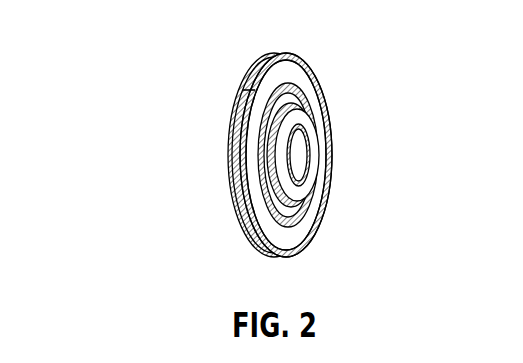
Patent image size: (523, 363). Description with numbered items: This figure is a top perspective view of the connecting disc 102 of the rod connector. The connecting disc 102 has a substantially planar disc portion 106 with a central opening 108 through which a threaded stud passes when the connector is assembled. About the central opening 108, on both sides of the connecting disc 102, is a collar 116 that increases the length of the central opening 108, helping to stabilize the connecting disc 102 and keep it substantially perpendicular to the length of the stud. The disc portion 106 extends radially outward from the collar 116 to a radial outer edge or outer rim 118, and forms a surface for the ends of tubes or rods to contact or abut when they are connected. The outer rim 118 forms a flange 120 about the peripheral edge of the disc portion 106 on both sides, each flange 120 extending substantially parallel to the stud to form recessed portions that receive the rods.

The connecting disc 102 is at (173, 120).
The disc portion 106 is at (297, 91).
The central opening 108 is at (303, 148).
The collar 116 is at (301, 183).
The outer rim 118 is at (272, 57).
The flange 120 is at (304, 239).